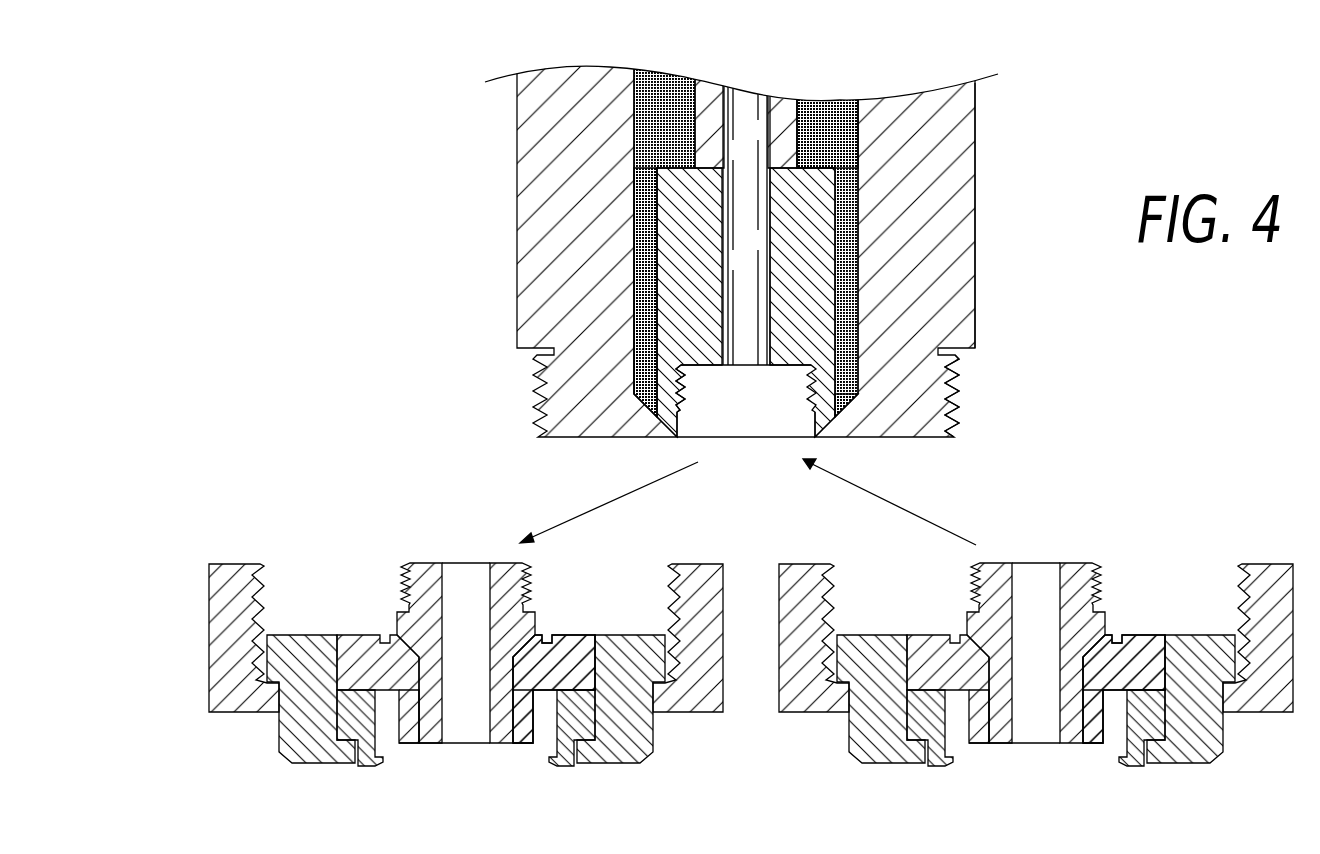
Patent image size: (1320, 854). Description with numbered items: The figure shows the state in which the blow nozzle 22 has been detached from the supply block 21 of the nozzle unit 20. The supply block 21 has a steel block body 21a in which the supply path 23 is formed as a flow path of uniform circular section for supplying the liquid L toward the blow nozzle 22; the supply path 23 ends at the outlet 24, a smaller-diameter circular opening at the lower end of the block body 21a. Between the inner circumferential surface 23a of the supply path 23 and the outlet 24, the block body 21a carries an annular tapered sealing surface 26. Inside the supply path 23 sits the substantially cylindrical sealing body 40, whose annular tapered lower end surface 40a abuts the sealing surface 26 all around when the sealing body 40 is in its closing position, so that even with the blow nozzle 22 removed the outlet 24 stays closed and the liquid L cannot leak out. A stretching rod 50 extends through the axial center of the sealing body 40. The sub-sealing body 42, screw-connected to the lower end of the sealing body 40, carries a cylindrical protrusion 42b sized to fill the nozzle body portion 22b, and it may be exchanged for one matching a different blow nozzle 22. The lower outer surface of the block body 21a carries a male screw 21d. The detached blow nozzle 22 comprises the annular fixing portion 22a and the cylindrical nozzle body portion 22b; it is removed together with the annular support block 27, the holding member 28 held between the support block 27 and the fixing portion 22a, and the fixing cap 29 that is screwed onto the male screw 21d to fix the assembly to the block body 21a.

The nozzle unit 20 is at (789, 279).
The supply block 21 is at (975, 163).
The block body 21a is at (950, 226).
The male screw 21d is at (962, 375).
The supply path 23 is at (642, 113).
The inner circumferential surface 23a is at (640, 248).
The outlet 24 is at (773, 440).
The sealing surface 26 is at (679, 418).
The sealing body 40 is at (830, 262).
The lower end surface 40a is at (824, 431).
The stretching rod 50 is at (742, 100).
The liquid L is at (822, 115).
The blow nozzle 22 is at (752, 668).
The fixing portion 22a is at (840, 667).
The nozzle body portion 22b is at (523, 733).
The sub-sealing body 42 is at (425, 562).
The protrusion 42b is at (718, 771).
The support block 27 is at (754, 724).
The holding member 28 is at (756, 744).
The fixing cap 29 is at (751, 658).